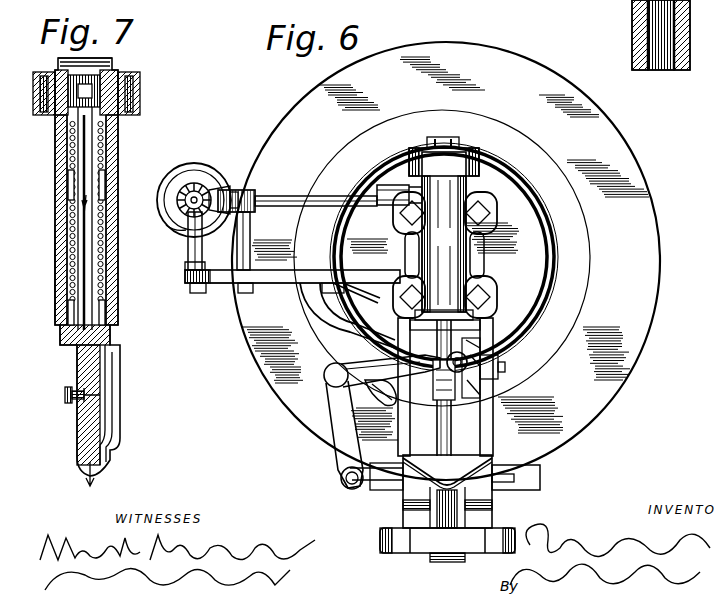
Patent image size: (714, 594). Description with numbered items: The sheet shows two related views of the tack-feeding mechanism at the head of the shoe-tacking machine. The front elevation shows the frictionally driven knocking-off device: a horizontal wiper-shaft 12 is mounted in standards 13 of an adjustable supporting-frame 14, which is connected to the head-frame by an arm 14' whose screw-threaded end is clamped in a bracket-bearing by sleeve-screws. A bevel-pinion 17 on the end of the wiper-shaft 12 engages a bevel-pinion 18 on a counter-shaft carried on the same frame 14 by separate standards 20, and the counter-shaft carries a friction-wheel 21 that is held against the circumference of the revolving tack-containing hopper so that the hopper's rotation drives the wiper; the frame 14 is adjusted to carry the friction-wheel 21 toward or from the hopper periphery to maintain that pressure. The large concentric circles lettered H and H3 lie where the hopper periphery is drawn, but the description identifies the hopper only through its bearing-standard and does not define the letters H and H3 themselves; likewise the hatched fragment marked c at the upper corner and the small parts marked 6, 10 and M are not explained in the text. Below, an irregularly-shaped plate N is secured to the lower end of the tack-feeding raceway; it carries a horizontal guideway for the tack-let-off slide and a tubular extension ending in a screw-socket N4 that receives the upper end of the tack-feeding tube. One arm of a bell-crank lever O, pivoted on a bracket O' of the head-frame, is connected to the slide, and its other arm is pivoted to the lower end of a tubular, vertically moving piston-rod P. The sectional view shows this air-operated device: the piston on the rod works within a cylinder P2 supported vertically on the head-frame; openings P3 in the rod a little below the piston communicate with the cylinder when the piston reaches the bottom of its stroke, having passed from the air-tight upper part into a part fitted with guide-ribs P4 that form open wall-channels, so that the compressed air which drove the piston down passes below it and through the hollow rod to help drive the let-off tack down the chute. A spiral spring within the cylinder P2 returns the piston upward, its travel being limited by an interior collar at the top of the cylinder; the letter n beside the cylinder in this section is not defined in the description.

In FIG. 7, the screw-socket N4 is at (87, 243).
In FIG. 7, the piston-rod P is at (56, 355).
In FIG. 7, the cylinder P2 is at (108, 160).
In FIG. 6, the cylinder P2 is at (445, 228).
In FIG. 7, the openings P3 is at (56, 136).
In FIG. 7, the guide-ribs P4 is at (106, 186).
In FIG. 7, the cylinder wall n is at (43, 275).
In FIG. 7, the bell-crank lever O is at (77, 408).
In FIG. 6, the bell-crank lever O is at (394, 420).
In FIG. 6, the bracket O' is at (380, 403).
In FIG. 6, the housing H is at (446, 261).
In FIG. 6, the inner ring H3 is at (442, 258).
In FIG. 6, the shaft block c is at (669, 35).
In FIG. 6, the wiper-shaft 12 is at (320, 195).
In FIG. 6, the standards 13 is at (231, 241).
In FIG. 6, the supporting-frame 14 is at (292, 279).
In FIG. 6, the frame-arm 14' is at (347, 315).
In FIG. 6, the bevel-pinion 17 is at (204, 185).
In FIG. 6, the bevel-pinion 18 is at (188, 182).
In FIG. 6, the standards 20 is at (185, 257).
In FIG. 6, the friction-wheel 21 is at (163, 233).
In FIG. 6, the piston rod 6 is at (445, 387).
In FIG. 6, the block 10 is at (502, 366).
In FIG. 6, the slide M is at (480, 380).
In FIG. 6, the guideway-plate N is at (455, 508).